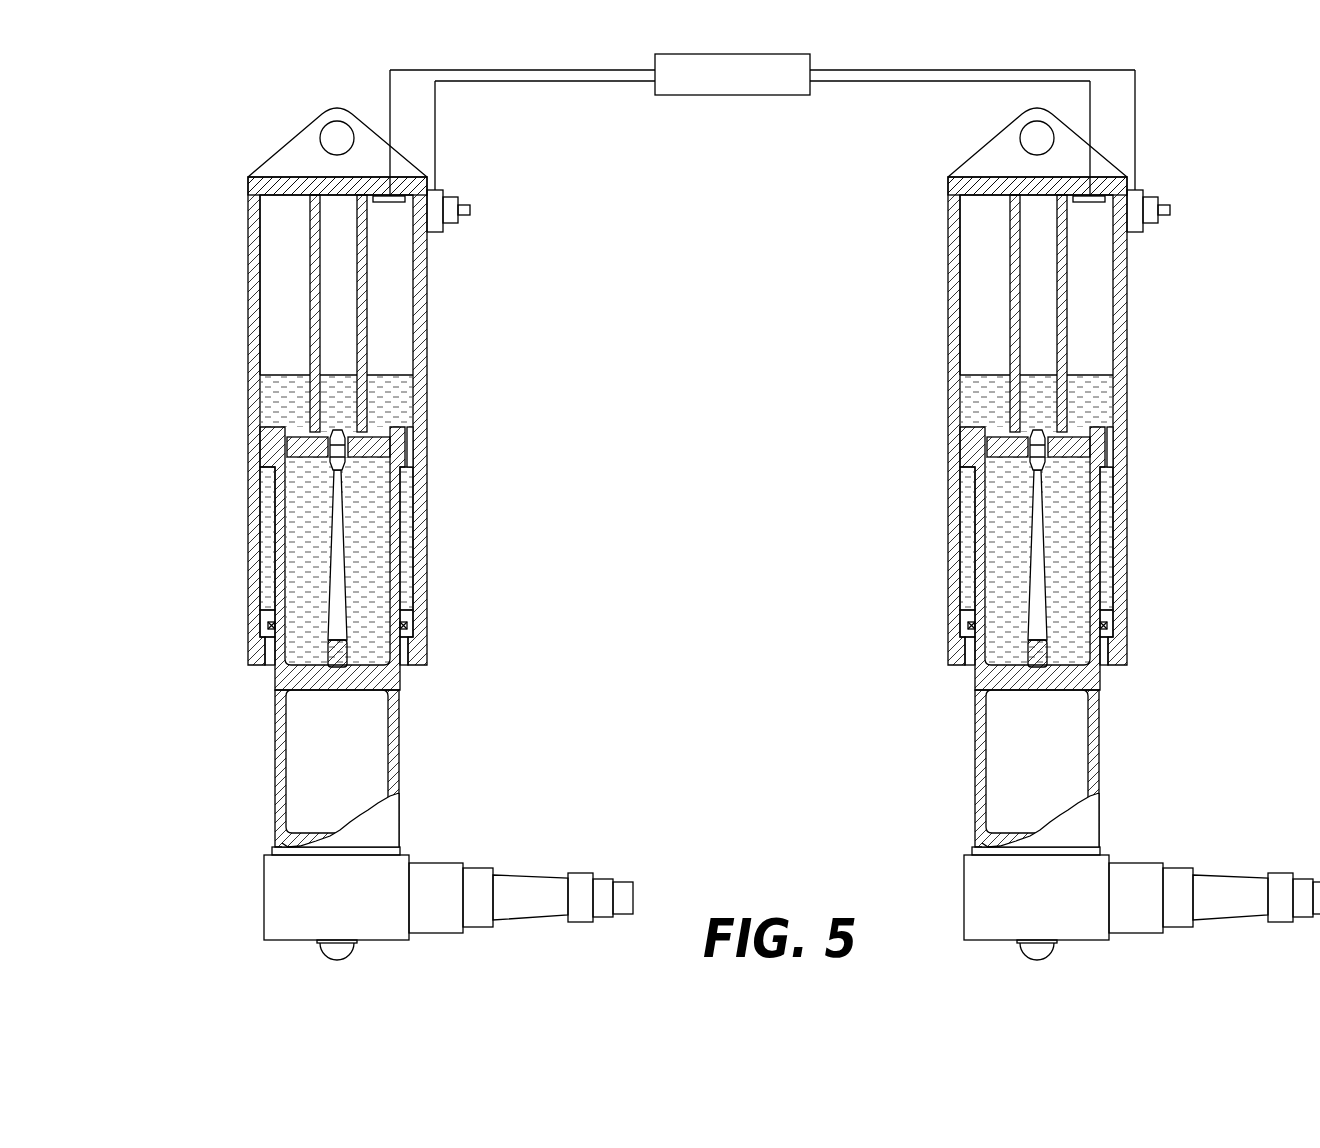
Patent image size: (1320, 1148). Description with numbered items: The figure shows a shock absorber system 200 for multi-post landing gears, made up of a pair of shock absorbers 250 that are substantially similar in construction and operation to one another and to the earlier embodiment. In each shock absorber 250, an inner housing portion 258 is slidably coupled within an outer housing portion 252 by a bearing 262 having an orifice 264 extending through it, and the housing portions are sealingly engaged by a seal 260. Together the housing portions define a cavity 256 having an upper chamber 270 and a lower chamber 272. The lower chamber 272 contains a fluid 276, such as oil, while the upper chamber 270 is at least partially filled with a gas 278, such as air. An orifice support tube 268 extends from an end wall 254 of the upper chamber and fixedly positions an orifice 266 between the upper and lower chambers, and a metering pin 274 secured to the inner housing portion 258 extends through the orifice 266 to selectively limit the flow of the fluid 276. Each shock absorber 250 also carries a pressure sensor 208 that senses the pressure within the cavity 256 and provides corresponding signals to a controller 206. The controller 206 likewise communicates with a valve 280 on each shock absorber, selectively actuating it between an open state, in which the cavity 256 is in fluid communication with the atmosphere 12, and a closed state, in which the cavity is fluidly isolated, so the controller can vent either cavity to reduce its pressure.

The shock absorber system 200 is at (155, 91).
The controller 206 is at (812, 58).
The atmosphere 12 is at (493, 148).
The shock absorber 250 is at (229, 176).
The outer housing portion 252 is at (427, 572).
The end wall 254 is at (287, 197).
The cavity 256 is at (275, 306).
The inner housing portion 258 is at (400, 733).
The seal 260 is at (405, 627).
The bearing 262 is at (398, 424).
The orifice 264 is at (410, 438).
The orifice 266 is at (331, 432).
The orifice support tube 268 is at (366, 336).
The upper chamber 270 is at (275, 340).
The lower chamber 272 is at (298, 592).
The metering pin 274 is at (345, 538).
The fluid 276 is at (306, 520).
The gas 278 is at (276, 250).
The valve 280 is at (460, 222).
The pressure sensor 208 is at (395, 203).